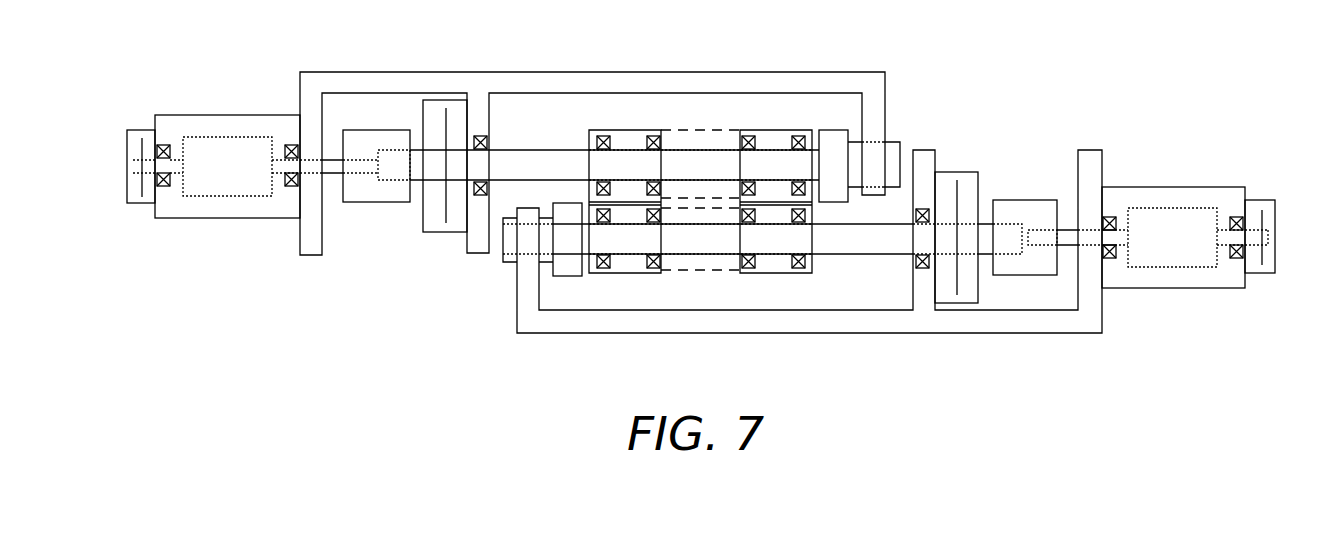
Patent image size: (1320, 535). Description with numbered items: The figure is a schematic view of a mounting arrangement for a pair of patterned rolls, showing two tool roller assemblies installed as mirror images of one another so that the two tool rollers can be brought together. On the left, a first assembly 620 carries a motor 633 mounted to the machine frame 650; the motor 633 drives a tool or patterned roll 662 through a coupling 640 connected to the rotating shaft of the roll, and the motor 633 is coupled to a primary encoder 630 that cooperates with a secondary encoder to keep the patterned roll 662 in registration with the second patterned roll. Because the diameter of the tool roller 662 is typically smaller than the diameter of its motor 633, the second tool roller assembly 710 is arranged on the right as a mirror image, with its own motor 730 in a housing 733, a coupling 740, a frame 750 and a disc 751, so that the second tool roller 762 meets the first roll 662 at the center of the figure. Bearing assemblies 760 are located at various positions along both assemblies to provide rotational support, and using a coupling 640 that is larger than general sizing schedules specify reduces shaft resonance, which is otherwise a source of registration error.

The first drive unit 620 is at (735, 52).
The primary encoder 630 is at (132, 132).
The motor 633 is at (233, 219).
The coupling 640 is at (377, 203).
The machine frame 650 is at (379, 72).
The patterned roll 662 is at (776, 129).
The tool roller assembly 710 is at (1094, 349).
The generator 730 is at (1268, 273).
The generator housing 733 is at (1175, 187).
The coupling 740 is at (1027, 200).
The frame 750 is at (852, 255).
The flywheel disc 751 is at (975, 173).
The bearings 760 is at (653, 269).
The tool roller 762 is at (598, 269).